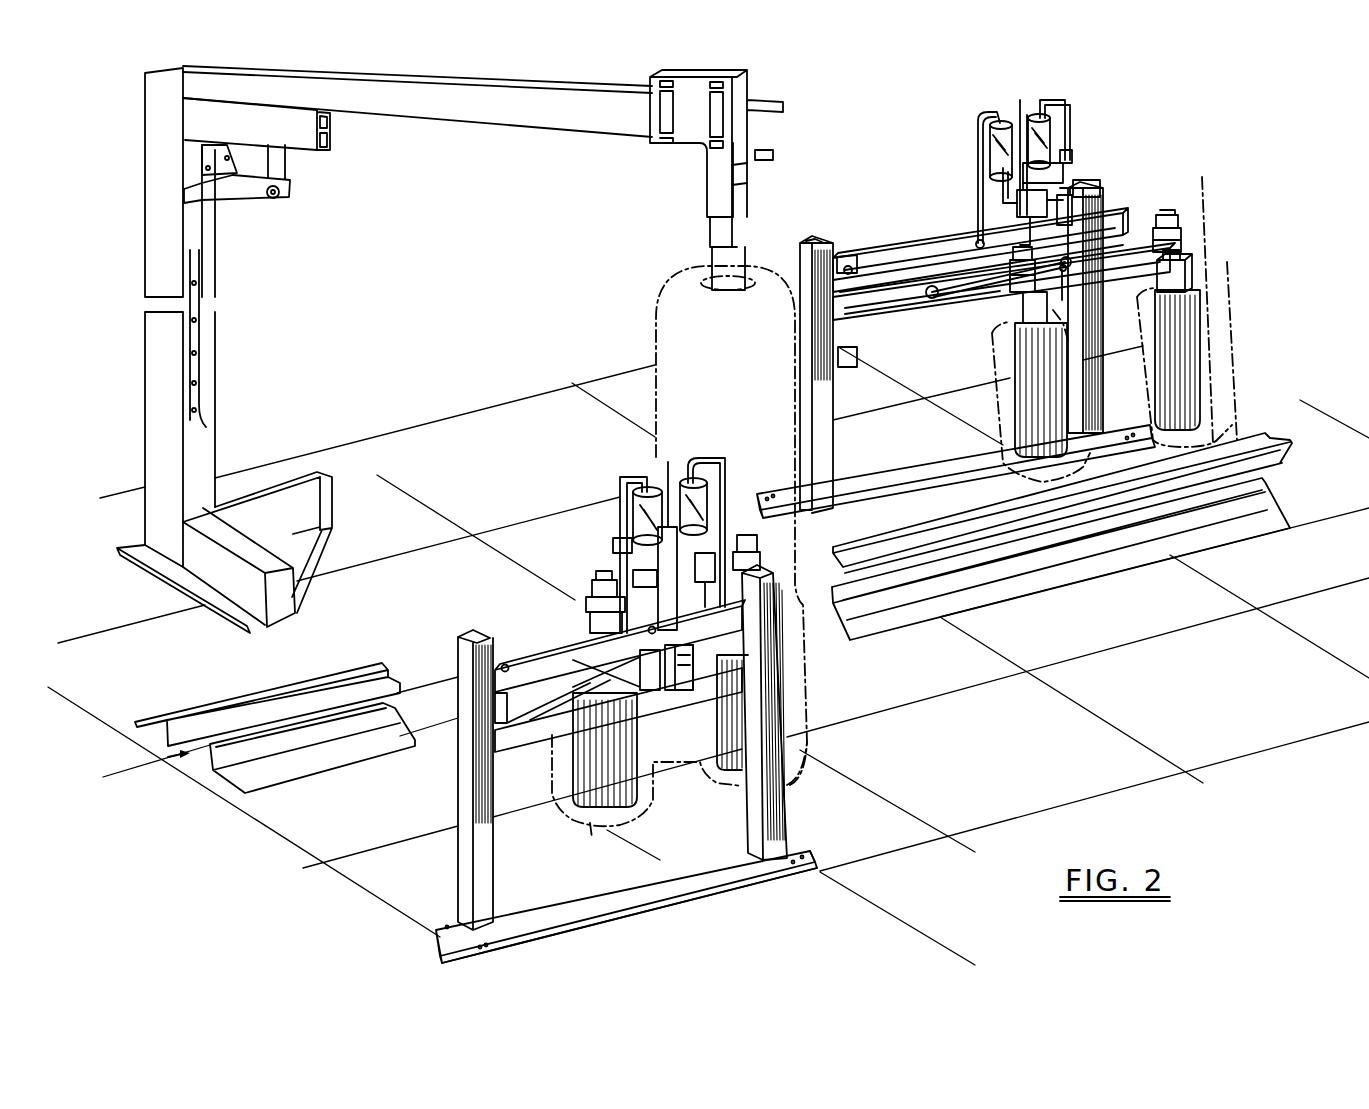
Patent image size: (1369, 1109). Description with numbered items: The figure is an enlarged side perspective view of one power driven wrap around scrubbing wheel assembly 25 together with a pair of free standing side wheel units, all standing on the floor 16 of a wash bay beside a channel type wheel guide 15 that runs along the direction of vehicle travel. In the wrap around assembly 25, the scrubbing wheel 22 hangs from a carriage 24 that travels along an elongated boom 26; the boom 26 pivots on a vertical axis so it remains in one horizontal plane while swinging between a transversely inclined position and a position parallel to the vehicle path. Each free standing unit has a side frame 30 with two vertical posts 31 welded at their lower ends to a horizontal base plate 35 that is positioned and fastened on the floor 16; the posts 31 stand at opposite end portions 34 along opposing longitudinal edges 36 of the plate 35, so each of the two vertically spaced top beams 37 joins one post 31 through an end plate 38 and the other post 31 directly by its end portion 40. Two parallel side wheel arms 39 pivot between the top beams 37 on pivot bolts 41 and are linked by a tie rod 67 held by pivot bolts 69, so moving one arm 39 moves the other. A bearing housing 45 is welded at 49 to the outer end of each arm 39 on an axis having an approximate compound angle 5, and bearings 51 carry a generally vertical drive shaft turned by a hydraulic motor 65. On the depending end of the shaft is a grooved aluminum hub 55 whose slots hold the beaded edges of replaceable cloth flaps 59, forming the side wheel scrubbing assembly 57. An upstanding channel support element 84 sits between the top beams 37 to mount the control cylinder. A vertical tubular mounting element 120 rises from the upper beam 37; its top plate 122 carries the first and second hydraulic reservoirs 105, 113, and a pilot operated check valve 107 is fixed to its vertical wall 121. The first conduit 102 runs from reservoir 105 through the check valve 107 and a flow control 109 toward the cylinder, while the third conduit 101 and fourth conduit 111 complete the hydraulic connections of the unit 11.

The compound angle 5 is at (1222, 208).
The lower processing unit 11 is at (812, 801).
The wheel guide 15 is at (212, 772).
The floor 16 is at (113, 708).
The wrap around scrubbing wheel 22 is at (668, 327).
The carriage 24 is at (692, 138).
The wrap around scrubbing wheel assembly 25 is at (385, 193).
The boom 26 is at (563, 118).
The side frame 30 is at (445, 652).
The vertical post 31 is at (833, 415).
The end portion 34 is at (800, 850).
The base plate 35 is at (907, 463).
The longitudinal edge 36 is at (747, 886).
The top beam 37 is at (878, 267).
The end plate 38 is at (837, 257).
The side wheel arm 39 is at (1128, 273).
The end portion 40 is at (1178, 193).
The pivot bolt 41 is at (852, 266).
The bearing housing 45 is at (1195, 270).
The weld 49 is at (1112, 290).
The bearing 51 is at (1178, 257).
The grooved hub 55 is at (1195, 391).
The side wheel scrubbing assembly 57 is at (668, 813).
The cloth flap 59 is at (1250, 320).
The hydraulic motor 65 is at (1176, 212).
The tie rod 67 is at (982, 287).
The pivot bolt 69 is at (932, 286).
The channel shape support element 84 is at (698, 668).
The third conduit 101 is at (1000, 115).
The first conduit 102 is at (1005, 180).
The first hydraulic reservoir 105 is at (998, 148).
The pilot operated check valve 107 is at (1002, 172).
The flow control 109 is at (735, 577).
The fourth conduit 111 is at (1068, 112).
The second hydraulic reservoir 113 is at (1052, 138).
The tubular mounting element 120 is at (1007, 198).
The vertical wall 121 is at (1073, 160).
The plate 122 is at (1020, 113).